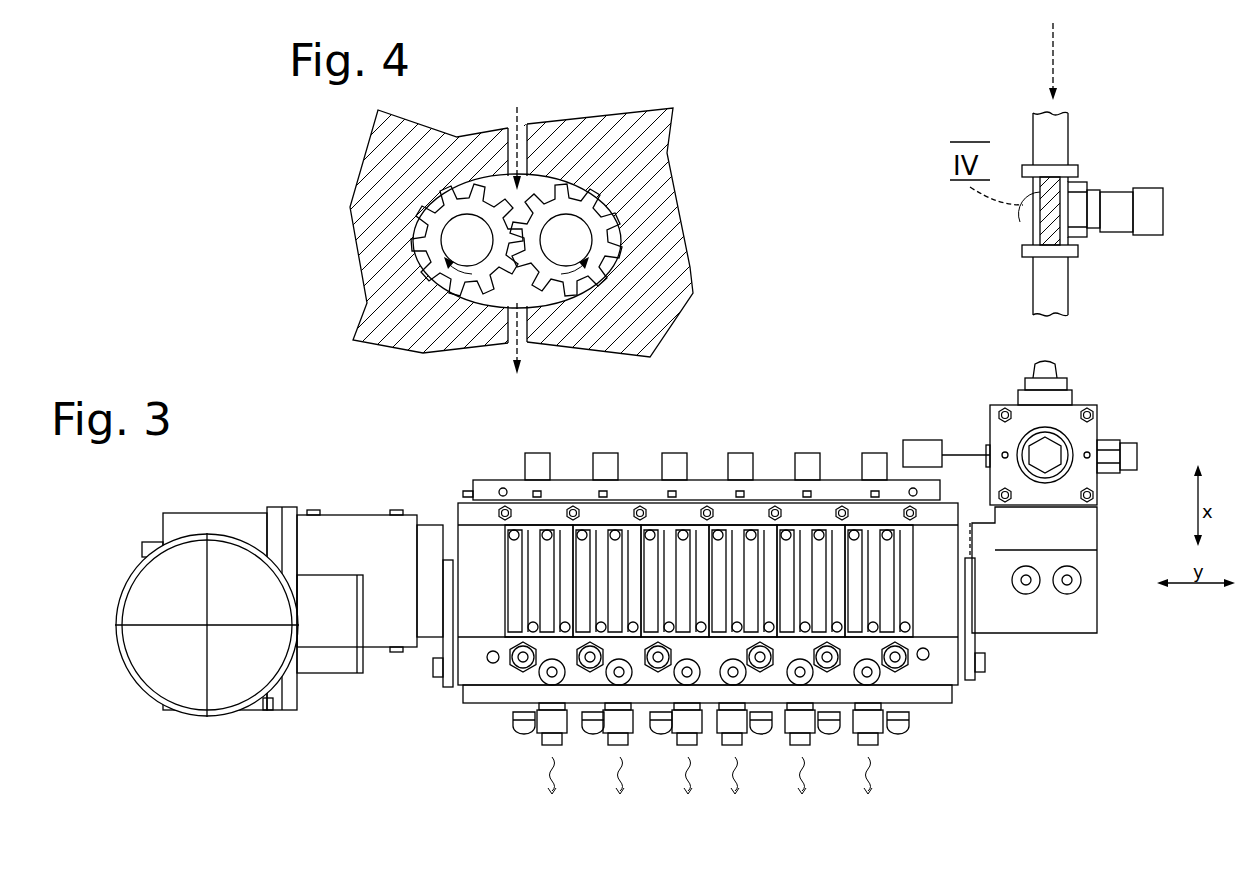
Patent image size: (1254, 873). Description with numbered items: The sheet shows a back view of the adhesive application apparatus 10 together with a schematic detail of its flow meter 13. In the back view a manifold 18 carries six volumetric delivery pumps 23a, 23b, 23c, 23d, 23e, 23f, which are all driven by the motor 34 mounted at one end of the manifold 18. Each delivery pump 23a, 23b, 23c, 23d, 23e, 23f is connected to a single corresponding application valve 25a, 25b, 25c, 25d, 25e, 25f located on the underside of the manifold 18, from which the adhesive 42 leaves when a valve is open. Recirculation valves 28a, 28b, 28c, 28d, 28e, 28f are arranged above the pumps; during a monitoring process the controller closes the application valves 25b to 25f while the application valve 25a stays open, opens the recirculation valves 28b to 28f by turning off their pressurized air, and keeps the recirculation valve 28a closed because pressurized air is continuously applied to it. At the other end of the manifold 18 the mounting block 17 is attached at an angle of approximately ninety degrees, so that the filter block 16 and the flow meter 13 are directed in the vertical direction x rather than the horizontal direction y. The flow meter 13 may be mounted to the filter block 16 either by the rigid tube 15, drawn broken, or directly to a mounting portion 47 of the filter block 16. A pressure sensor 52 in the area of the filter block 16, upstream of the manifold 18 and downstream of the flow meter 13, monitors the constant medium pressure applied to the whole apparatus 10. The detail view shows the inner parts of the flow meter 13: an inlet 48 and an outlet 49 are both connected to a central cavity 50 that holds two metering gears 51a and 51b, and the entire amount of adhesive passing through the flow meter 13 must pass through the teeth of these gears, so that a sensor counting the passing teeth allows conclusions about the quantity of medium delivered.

In FIG. 3, the apparatus 10 is at (835, 297).
In FIG. 3, the flow meter 13 is at (1068, 165).
In FIG. 3, the rigid tube 15 is at (1045, 285).
In FIG. 3, the filter block 16 is at (1085, 432).
In FIG. 3, the mounting block 17 is at (1038, 610).
In FIG. 3, the manifold 18 is at (678, 568).
In FIG. 3, the delivery pump 23a is at (522, 580).
In FIG. 3, the delivery pump 23b is at (590, 578).
In FIG. 3, the delivery pump 23c is at (670, 578).
In FIG. 3, the delivery pump 23d is at (728, 580).
In FIG. 3, the delivery pump 23e is at (795, 578).
In FIG. 3, the delivery pump 23f is at (862, 578).
In FIG. 3, the application valve 25a is at (540, 737).
In FIG. 3, the application valve 25b is at (612, 725).
In FIG. 3, the application valve 25c is at (680, 722).
In FIG. 3, the application valve 25d is at (737, 723).
In FIG. 3, the application valve 25e is at (808, 720).
In FIG. 3, the application valve 25f is at (873, 722).
In FIG. 3, the recirculation valve 28a is at (525, 468).
In FIG. 3, the recirculation valve 28b is at (605, 468).
In FIG. 3, the recirculation valve 28c is at (675, 467).
In FIG. 3, the recirculation valve 28d is at (745, 466).
In FIG. 3, the recirculation valve 28e is at (813, 466).
In FIG. 3, the recirculation valve 28f is at (878, 466).
In FIG. 3, the motor 34 is at (225, 695).
In FIG. 3, the adhesive 42 is at (870, 760).
In FIG. 3, the mounting portion 47 is at (1055, 385).
In FIG. 4, the inlet 48 is at (523, 110).
In FIG. 4, the outlet 49 is at (528, 350).
In FIG. 4, the central cavity 50 is at (530, 185).
In FIG. 4, the metering gear 51a is at (438, 233).
In FIG. 4, the metering gear 51b is at (598, 250).
In FIG. 3, the pressure sensor 52 is at (942, 443).